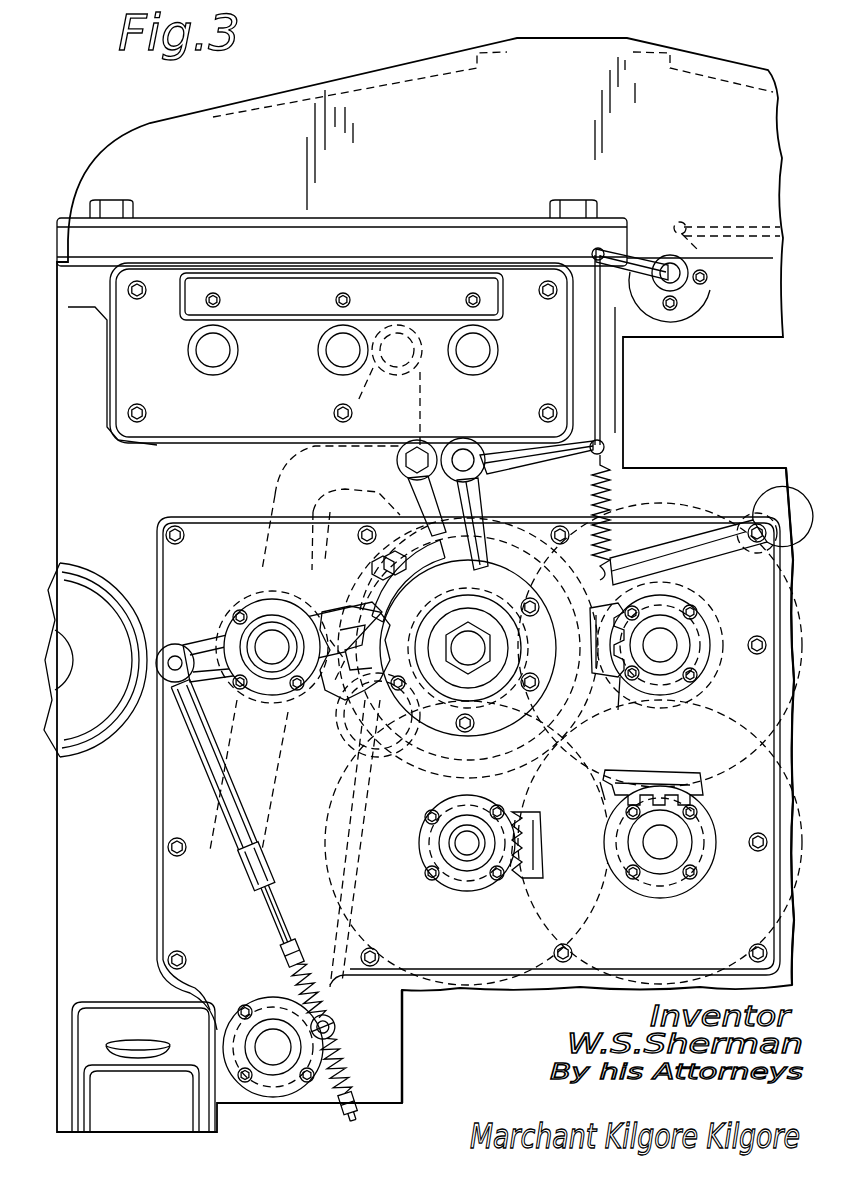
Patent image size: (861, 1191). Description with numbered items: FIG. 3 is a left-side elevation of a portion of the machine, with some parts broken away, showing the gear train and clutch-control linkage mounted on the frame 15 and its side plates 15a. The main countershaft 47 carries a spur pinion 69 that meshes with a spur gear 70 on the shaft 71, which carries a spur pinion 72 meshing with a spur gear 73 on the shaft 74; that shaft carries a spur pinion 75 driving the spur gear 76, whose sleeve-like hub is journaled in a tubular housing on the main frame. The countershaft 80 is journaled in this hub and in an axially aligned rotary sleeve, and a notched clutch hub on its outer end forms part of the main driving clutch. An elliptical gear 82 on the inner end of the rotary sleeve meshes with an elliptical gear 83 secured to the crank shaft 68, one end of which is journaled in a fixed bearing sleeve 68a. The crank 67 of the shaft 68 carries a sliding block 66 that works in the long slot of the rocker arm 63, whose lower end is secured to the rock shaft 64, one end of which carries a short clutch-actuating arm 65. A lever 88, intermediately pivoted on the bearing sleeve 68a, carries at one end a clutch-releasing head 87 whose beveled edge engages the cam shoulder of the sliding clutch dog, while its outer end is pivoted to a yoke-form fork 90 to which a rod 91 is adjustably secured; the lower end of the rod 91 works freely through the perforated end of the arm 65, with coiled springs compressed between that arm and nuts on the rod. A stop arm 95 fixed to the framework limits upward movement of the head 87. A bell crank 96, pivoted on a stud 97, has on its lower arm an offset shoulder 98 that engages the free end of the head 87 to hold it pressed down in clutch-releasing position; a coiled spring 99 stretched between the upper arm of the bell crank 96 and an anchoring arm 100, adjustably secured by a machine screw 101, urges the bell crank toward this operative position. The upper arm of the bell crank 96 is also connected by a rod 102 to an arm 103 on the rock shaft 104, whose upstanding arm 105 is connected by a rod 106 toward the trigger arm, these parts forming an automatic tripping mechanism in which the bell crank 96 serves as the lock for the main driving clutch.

The frame 15 is at (690, 472).
The plates 15a is at (163, 278).
The main countershaft 47 is at (467, 847).
The rocker arm 63 is at (273, 492).
The rock shaft 64 is at (275, 1050).
The clutch-actuating arm 65 is at (354, 1025).
The sliding block 66 is at (350, 722).
The crank 67 is at (392, 690).
The crank shaft 68 is at (272, 662).
The fixed bearing sleeve 68a is at (274, 630).
The spur pinion 69 is at (512, 878).
The spur gear 70 is at (540, 865).
The shaft 71 is at (662, 846).
The spur pinion 72 is at (695, 800).
The spur gear 73 is at (685, 775).
The shaft 74 is at (662, 648).
The spur pinion 75 is at (620, 690).
The spur gear 76 is at (600, 665).
The countershaft 80 is at (470, 650).
The elliptical gear 82 is at (345, 648).
The elliptical gear 83 is at (322, 678).
The clutch-releasing head 87 is at (418, 565).
The lever 88 is at (220, 656).
The fork 90 is at (205, 792).
The rod 91 is at (300, 904).
The stop arm 95 is at (425, 452).
The bell crank 96 is at (520, 462).
The stud 97 is at (465, 460).
The offset shoulder 98 is at (488, 573).
The coiled spring 99 is at (592, 500).
The anchoring arm 100 is at (680, 558).
The machine screw 101 is at (755, 525).
The rod 102 is at (600, 408).
The arm 103 is at (638, 265).
The rock shaft 104 is at (676, 278).
The upstanding arm 105 is at (705, 242).
The rod 106 is at (722, 236).